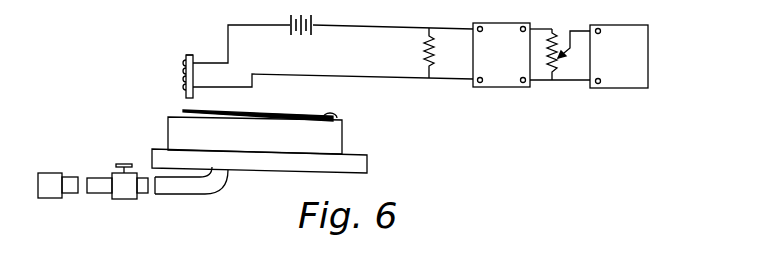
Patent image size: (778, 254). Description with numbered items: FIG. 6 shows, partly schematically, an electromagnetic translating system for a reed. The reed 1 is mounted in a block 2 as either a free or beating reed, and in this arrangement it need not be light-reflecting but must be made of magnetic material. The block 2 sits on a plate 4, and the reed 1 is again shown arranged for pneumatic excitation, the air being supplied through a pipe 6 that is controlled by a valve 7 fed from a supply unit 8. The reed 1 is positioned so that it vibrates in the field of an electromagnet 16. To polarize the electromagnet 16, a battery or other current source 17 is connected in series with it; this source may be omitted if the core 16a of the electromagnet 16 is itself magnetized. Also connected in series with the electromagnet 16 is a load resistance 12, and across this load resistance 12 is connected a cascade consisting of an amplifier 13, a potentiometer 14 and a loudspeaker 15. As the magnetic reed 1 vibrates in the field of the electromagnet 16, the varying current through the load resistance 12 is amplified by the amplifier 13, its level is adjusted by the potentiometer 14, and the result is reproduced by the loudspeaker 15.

The reed 1 is at (276, 117).
The block 2 is at (334, 139).
The base plate 4 is at (367, 162).
The pipe 6 is at (216, 184).
The valve 7 is at (112, 173).
The supply unit 8 is at (46, 173).
The load resistance 12 is at (425, 52).
The amplifier 13 is at (503, 88).
The potentiometer 14 is at (556, 68).
The loudspeaker 15 is at (626, 88).
The electromagnet 16 is at (186, 80).
The core 16a is at (186, 58).
The battery 17 is at (313, 17).